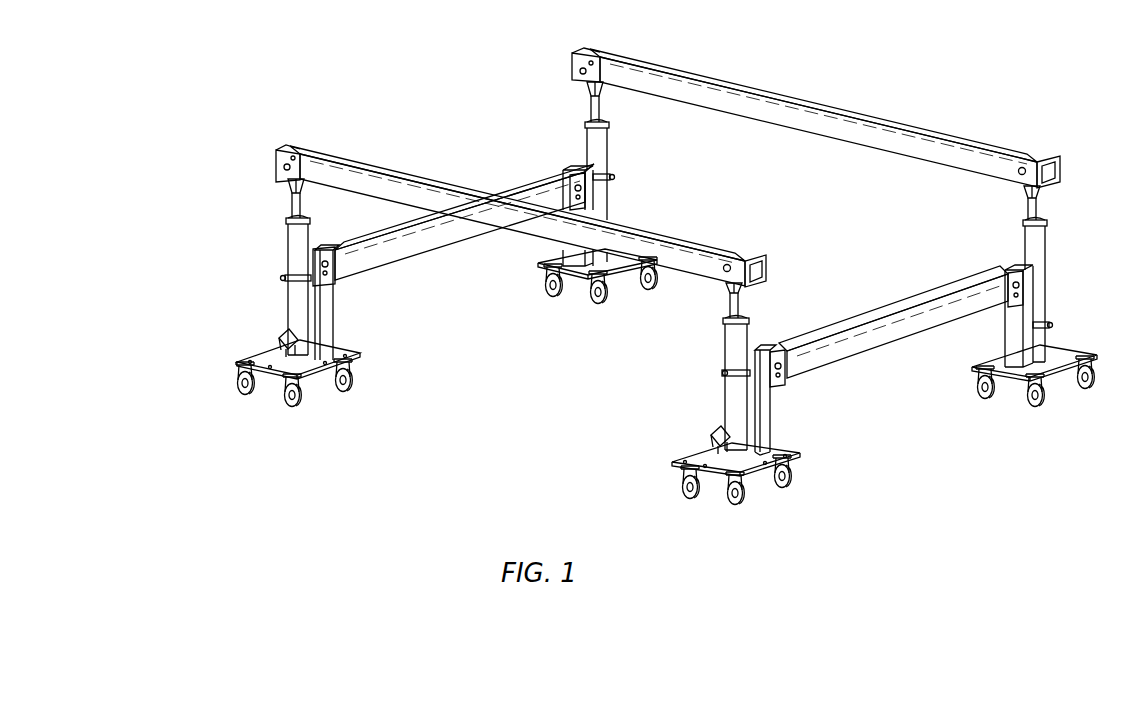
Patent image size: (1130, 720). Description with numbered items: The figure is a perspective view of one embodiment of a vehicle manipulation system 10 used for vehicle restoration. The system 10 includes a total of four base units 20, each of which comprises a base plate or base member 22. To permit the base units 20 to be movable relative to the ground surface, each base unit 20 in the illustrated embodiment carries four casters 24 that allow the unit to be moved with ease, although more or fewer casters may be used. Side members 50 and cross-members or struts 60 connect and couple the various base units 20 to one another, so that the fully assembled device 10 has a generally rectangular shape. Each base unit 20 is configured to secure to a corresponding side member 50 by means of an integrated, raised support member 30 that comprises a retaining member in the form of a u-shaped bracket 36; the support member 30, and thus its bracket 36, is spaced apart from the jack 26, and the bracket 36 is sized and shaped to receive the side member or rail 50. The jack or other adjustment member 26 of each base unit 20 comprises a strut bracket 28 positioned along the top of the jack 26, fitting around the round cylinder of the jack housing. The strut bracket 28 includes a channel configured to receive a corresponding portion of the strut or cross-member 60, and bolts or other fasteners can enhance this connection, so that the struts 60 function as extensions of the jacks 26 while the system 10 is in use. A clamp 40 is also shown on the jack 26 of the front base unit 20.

The vehicle manipulation system 10 is at (1038, 88).
The base unit 20 is at (250, 326).
The base plate 22 is at (700, 452).
The caster 24 is at (720, 505).
The jack 26 is at (733, 342).
The strut bracket 28 is at (717, 270).
The raised support member 30 is at (770, 408).
The bracket 36 is at (782, 358).
The clamp 40 is at (753, 367).
The side member 50 is at (537, 183).
The strut 60 is at (858, 113).